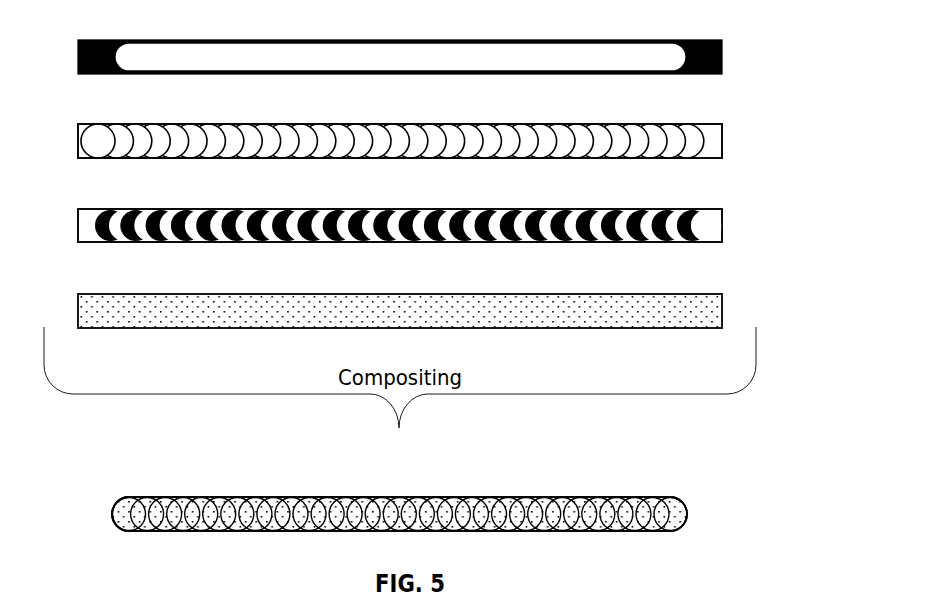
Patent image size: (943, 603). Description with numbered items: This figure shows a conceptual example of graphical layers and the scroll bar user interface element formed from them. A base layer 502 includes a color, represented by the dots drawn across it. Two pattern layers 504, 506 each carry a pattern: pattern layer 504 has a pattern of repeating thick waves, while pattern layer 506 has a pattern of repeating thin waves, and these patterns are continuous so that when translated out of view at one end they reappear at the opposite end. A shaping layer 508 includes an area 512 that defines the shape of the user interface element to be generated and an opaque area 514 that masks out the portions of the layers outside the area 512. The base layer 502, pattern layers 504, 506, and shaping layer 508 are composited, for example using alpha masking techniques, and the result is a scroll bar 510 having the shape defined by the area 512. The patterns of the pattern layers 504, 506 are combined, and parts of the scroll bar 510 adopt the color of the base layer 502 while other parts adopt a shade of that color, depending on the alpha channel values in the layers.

The base layer 502 is at (722, 310).
The pattern layer 504 is at (722, 226).
The pattern layer 506 is at (722, 143).
The shaping layer 508 is at (722, 57).
The scroll bar 510 is at (446, 497).
The area 512 is at (386, 40).
The opaque area 514 is at (107, 40).